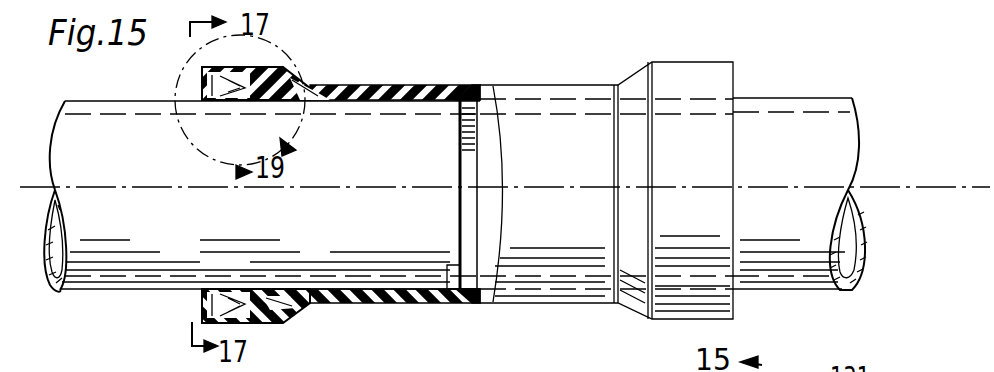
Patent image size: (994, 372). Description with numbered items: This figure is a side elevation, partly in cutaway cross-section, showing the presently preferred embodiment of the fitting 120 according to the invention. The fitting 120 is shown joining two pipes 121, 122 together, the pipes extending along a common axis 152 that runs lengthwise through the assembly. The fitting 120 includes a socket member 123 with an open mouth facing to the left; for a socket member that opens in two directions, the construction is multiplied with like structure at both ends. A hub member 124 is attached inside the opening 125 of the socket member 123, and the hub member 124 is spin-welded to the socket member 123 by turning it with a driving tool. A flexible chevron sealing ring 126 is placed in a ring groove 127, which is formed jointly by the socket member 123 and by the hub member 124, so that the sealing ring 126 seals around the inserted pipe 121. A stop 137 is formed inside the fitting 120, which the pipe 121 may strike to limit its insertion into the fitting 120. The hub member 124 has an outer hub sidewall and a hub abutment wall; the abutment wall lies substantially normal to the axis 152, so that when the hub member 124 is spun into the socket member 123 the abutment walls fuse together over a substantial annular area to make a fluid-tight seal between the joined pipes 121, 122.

The fitting 120 is at (505, 78).
The pipe 121 is at (114, 101).
The pipe 122 is at (762, 98).
The socket member 123 is at (312, 102).
The hub member 124 is at (204, 304).
The opening 125 is at (186, 84).
The flexible chevron sealing ring 126 is at (262, 300).
The ring groove 127 is at (280, 298).
The stop 137 is at (466, 290).
The axis 152 is at (870, 187).